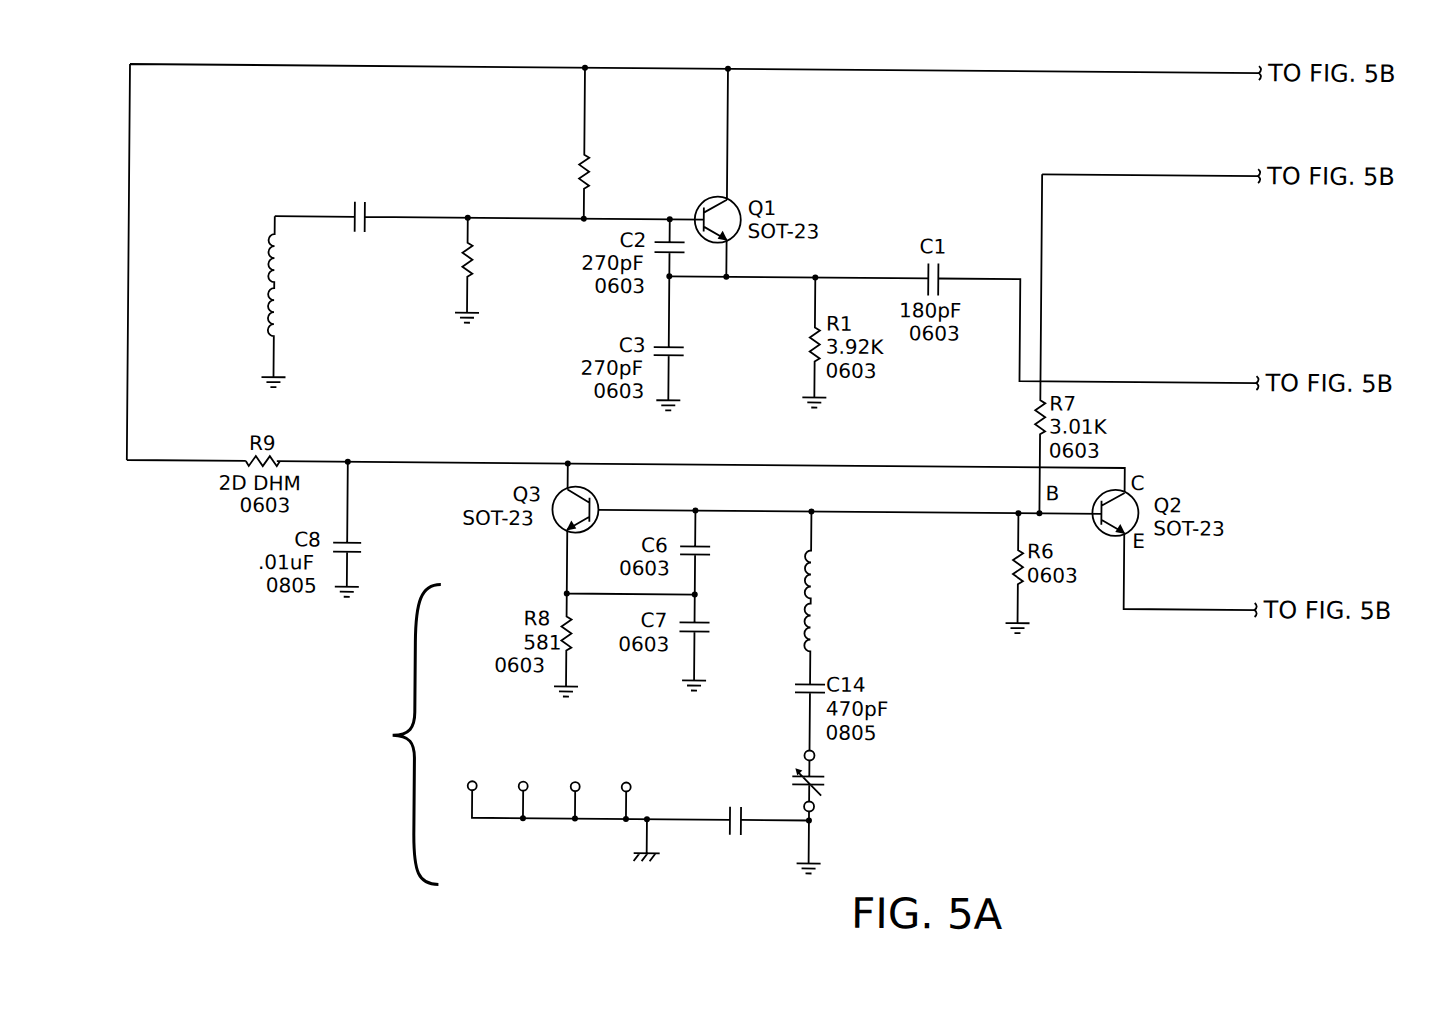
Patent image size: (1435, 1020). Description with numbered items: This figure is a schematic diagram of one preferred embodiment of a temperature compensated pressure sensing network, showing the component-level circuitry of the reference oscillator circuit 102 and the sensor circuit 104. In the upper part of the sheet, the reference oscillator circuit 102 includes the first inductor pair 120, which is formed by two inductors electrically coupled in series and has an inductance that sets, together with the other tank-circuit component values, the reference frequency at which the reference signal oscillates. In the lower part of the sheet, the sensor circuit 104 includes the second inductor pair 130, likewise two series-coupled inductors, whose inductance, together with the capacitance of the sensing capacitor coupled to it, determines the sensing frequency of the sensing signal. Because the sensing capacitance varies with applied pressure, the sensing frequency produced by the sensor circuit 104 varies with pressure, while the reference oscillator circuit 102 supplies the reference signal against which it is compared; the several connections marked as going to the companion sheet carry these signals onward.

The reference oscillator circuit 102 is at (464, 140).
The first inductor pair 120 is at (226, 252).
The second inductor pair 130 is at (905, 634).
The sensor circuit 104 is at (398, 733).